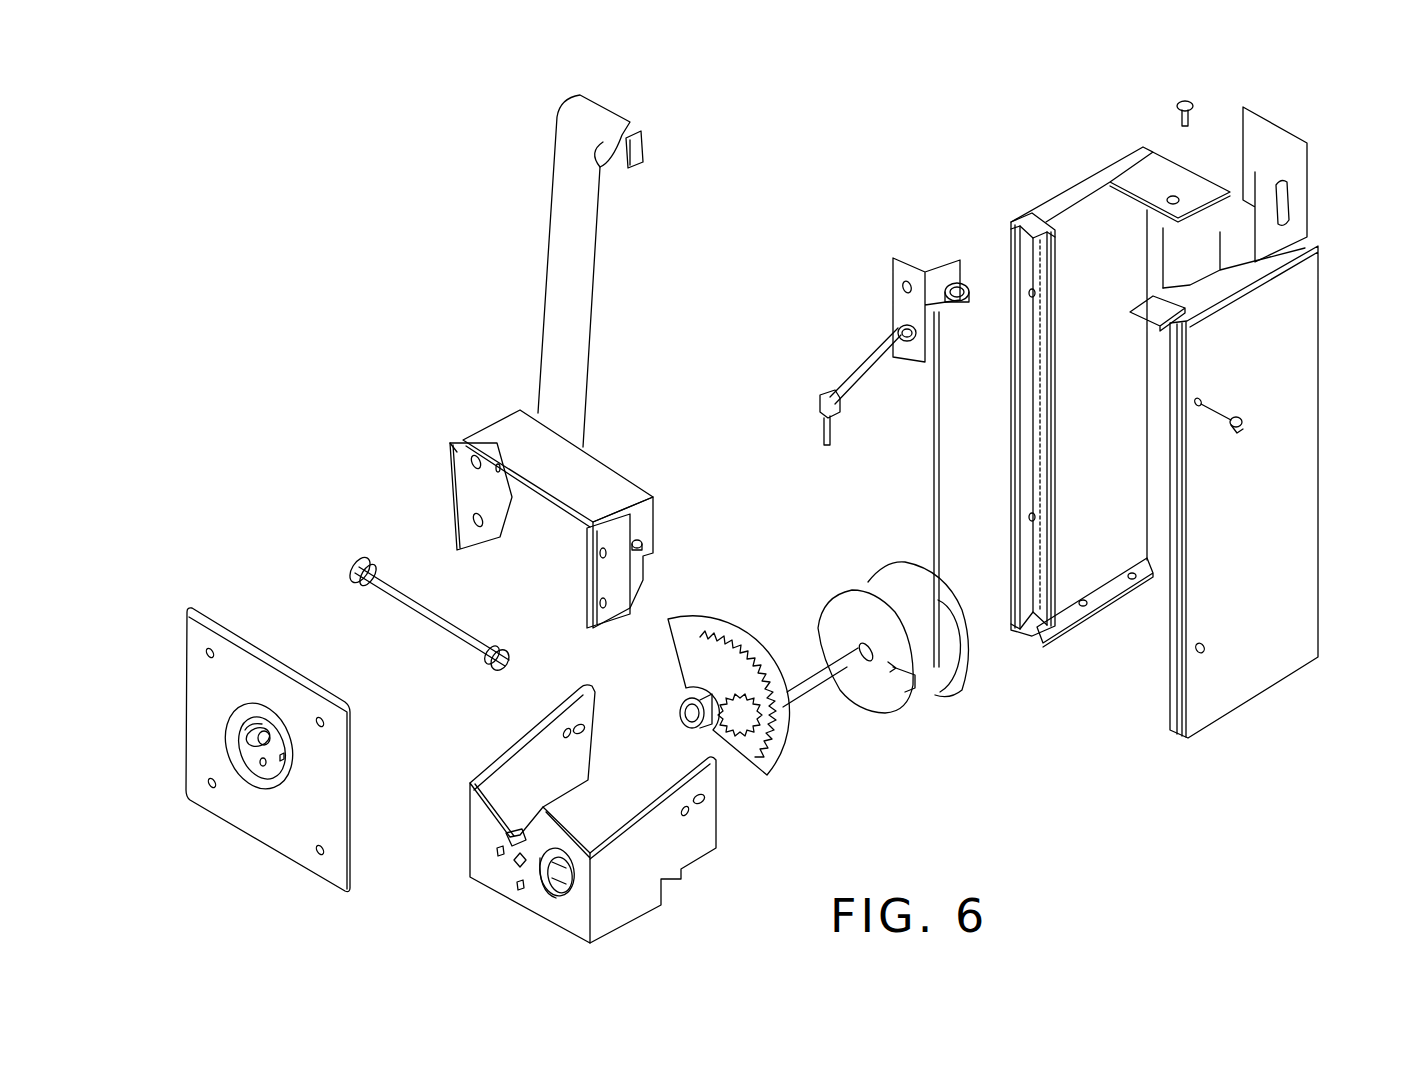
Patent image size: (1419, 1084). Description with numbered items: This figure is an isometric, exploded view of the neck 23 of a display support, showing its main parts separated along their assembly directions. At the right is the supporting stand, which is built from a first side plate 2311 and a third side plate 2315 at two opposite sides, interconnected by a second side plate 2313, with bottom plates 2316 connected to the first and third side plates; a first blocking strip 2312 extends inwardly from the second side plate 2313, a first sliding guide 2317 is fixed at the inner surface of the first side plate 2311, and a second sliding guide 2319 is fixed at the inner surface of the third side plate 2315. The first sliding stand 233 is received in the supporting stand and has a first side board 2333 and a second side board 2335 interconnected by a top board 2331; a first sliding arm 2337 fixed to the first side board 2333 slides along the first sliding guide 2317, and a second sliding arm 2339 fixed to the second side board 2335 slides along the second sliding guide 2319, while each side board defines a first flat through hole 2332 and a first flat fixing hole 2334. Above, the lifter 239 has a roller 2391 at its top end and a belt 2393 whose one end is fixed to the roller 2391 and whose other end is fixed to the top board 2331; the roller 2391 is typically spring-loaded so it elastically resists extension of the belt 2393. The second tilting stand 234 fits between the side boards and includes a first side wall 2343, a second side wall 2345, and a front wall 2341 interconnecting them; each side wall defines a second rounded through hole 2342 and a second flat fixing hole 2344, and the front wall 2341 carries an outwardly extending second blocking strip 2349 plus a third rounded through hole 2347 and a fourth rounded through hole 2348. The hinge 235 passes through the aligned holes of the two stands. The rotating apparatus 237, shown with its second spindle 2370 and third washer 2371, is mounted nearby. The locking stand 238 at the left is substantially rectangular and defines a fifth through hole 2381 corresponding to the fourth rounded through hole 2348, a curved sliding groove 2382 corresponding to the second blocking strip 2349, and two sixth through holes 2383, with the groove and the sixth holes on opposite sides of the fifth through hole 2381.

The neck 23 is at (784, 114).
The lifter 239 is at (724, 174).
The roller 2391 is at (612, 152).
The belt 2393 is at (588, 198).
The first sliding stand 233 is at (502, 392).
The top board 2331 is at (508, 425).
The first flat through hole 2332 is at (645, 541).
The first side board 2333 is at (635, 512).
The first flat fixing hole 2334 is at (497, 470).
The second side board 2335 is at (465, 475).
The first sliding arm 2337 is at (622, 572).
The second sliding arm 2339 is at (452, 446).
The hinge 235 is at (425, 615).
The rotating apparatus 237 is at (870, 555).
The second spindle 2370 is at (690, 715).
The third washer 2371 is at (720, 688).
The second tilting stand 234 is at (456, 785).
The front wall 2341 is at (484, 822).
The second rounded through hole 2342 is at (582, 728).
The first side wall 2343 is at (620, 897).
The second flat fixing hole 2344 is at (566, 730).
The second side wall 2345 is at (512, 773).
The third rounded through hole 2347 is at (556, 888).
The fourth rounded through hole 2348 is at (516, 858).
The second blocking strip 2349 is at (506, 838).
The locking stand 238 is at (226, 605).
The fifth through hole 2381 is at (262, 735).
The curved sliding groove 2382 is at (245, 718).
The sixth through holes 2383 is at (262, 761).
The second sliding guide 2319 is at (1037, 267).
The first blocking strip 2312 is at (1147, 312).
The third side plate 2315 is at (1118, 185).
The second side plate 2313 is at (1240, 223).
The first side plate 2311 is at (1293, 330).
The first sliding guide 2317 is at (1173, 690).
The bottom plates 2316 is at (1113, 583).